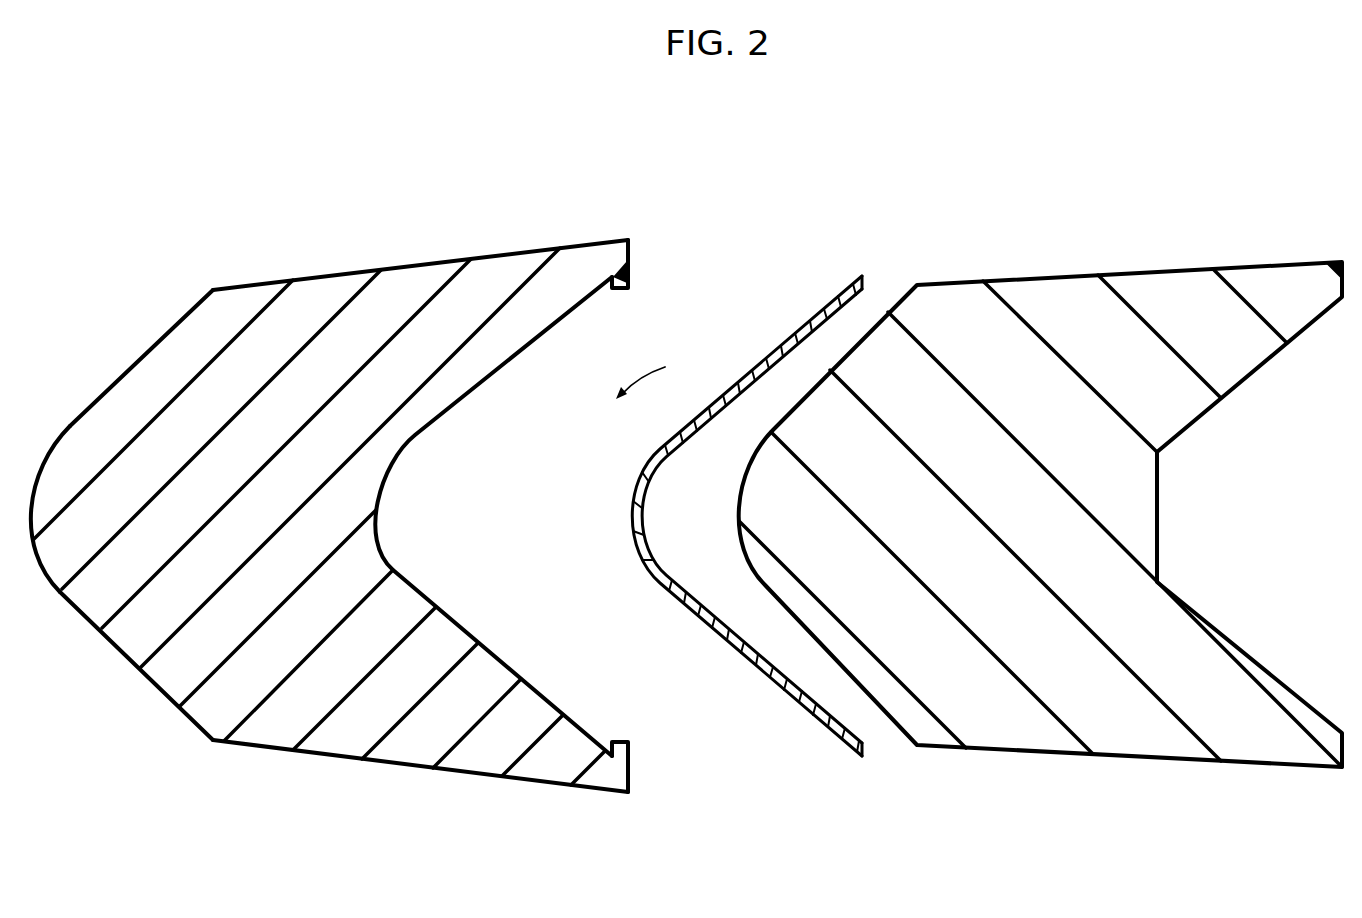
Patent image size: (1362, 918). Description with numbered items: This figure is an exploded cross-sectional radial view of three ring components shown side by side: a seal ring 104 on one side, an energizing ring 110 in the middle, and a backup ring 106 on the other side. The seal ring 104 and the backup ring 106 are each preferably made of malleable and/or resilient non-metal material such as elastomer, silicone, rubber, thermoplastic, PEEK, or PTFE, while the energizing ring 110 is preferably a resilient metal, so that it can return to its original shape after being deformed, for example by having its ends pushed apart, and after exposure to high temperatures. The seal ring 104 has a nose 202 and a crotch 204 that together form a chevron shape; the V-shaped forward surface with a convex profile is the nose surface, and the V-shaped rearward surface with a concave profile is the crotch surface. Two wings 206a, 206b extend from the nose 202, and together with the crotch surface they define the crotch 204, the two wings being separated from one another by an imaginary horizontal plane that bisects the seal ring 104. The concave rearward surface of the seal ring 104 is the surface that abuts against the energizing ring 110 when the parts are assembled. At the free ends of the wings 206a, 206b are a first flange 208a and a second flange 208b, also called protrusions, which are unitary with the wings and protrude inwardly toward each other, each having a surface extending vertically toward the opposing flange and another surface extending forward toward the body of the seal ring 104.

The seal ring 104 is at (267, 283).
The backup ring 106 is at (1030, 278).
The energizing ring 110 is at (697, 625).
The nose 202 is at (72, 428).
The crotch 204 is at (663, 374).
The wing 206a is at (457, 253).
The wing 206b is at (453, 774).
The first flange 208a is at (628, 263).
The second flange 208b is at (622, 748).